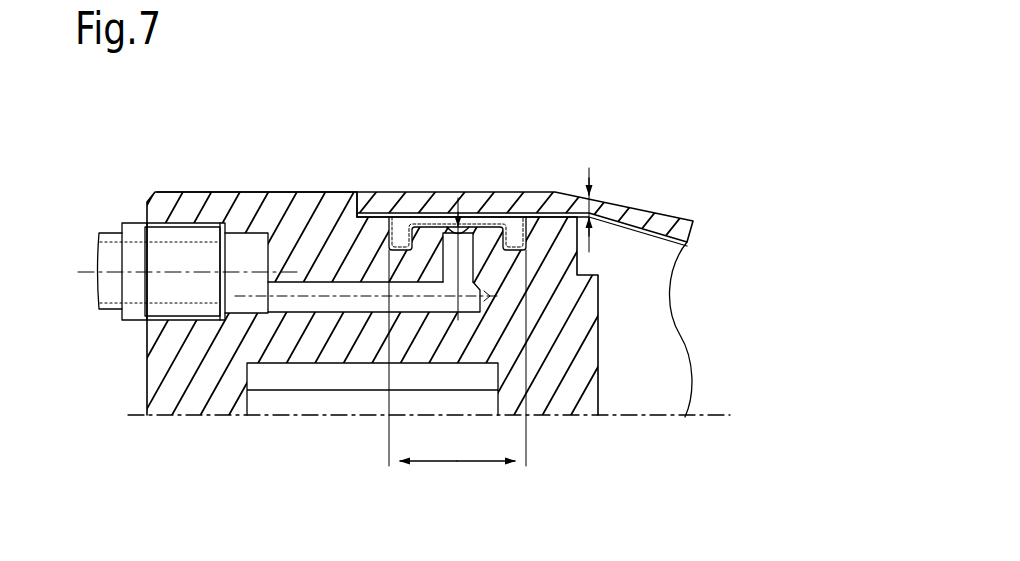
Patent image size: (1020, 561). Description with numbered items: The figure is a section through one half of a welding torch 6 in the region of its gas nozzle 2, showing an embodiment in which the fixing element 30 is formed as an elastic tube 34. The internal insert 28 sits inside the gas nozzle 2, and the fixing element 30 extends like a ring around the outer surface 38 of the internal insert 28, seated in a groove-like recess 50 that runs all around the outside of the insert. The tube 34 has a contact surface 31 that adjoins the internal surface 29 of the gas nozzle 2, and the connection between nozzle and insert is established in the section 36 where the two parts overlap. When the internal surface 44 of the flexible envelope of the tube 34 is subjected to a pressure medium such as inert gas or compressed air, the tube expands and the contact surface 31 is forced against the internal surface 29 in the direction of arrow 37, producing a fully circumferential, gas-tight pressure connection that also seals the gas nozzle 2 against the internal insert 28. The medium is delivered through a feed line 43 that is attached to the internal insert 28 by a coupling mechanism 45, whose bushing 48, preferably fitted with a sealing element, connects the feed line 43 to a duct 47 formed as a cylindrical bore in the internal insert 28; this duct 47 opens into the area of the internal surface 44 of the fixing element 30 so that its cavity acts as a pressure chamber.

The gas nozzle 2 is at (502, 172).
The welding torch 6 is at (628, 172).
The internal insert 28 is at (283, 162).
The internal surface 29 is at (487, 223).
The fixing element 30 is at (541, 240).
The contact surface 31 is at (425, 215).
The tube 34 is at (532, 251).
The section 36 is at (483, 457).
The arrow 37 is at (592, 183).
The outer surface 38 is at (190, 192).
The feed line 43 is at (110, 287).
The internal surface 44 is at (443, 234).
The coupling mechanism 45 is at (95, 323).
The duct 47 is at (336, 306).
The bushing 48 is at (133, 205).
The recess 50 is at (385, 205).